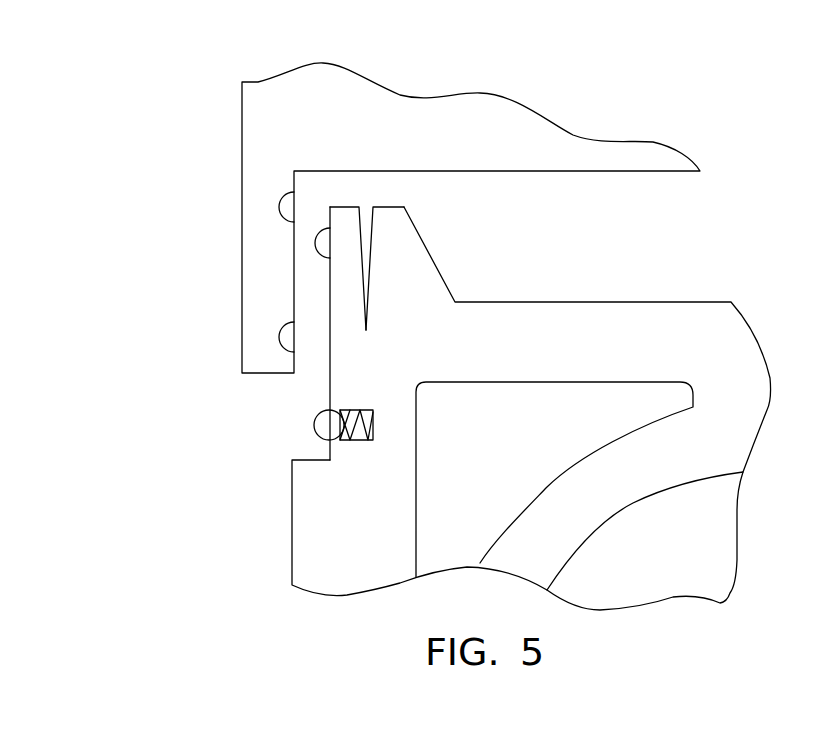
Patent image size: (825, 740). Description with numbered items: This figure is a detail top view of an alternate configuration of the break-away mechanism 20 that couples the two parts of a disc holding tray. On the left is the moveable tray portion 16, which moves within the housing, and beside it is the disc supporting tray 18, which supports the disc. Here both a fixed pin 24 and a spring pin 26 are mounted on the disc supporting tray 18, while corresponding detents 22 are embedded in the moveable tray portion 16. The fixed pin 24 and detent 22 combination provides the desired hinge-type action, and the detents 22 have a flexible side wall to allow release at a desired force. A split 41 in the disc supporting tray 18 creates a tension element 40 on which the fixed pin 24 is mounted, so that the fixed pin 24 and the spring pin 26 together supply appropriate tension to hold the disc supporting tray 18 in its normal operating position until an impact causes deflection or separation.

The moveable tray portion 16 is at (267, 117).
The disc supporting tray 18 is at (292, 520).
The break-away mechanism 20 is at (240, 403).
The detent 22 is at (279, 208).
The fixed pin 24 is at (316, 243).
The spring pin 26 is at (315, 424).
The tension element 40 is at (342, 205).
The split 41 is at (367, 205).